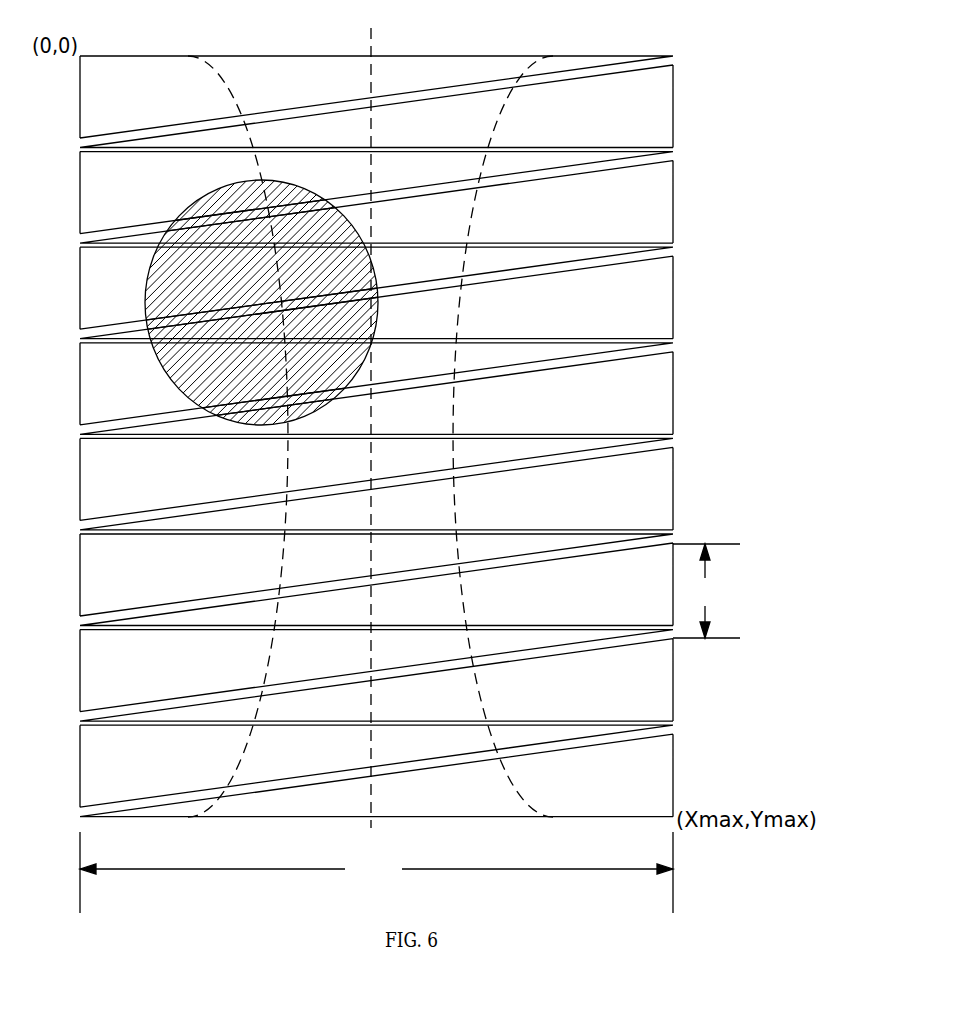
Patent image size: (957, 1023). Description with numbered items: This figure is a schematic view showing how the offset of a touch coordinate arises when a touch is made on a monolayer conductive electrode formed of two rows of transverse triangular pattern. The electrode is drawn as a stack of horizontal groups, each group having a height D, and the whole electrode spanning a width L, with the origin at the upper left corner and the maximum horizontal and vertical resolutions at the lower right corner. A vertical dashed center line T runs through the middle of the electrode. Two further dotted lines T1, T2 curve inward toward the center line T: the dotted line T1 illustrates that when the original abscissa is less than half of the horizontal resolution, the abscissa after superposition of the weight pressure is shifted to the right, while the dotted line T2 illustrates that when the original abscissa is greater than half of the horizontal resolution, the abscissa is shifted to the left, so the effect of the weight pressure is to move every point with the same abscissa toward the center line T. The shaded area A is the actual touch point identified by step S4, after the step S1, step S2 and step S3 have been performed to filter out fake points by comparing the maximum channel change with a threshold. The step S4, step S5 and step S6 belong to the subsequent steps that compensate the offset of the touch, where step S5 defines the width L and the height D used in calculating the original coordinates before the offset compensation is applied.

The shaded area A is at (309, 302).
The step S1 is at (376, 193).
The step S2 is at (376, 202).
The step S3 is at (376, 288).
The step S4 is at (376, 298).
The step S5 is at (376, 384).
The step S6 is at (376, 393).
The center line T is at (378, 414).
The dotted line T1 is at (229, 422).
The dotted line T2 is at (517, 422).
The height of each group of conductive electrode D is at (706, 591).
The width of the conductive electrode L is at (376, 872).